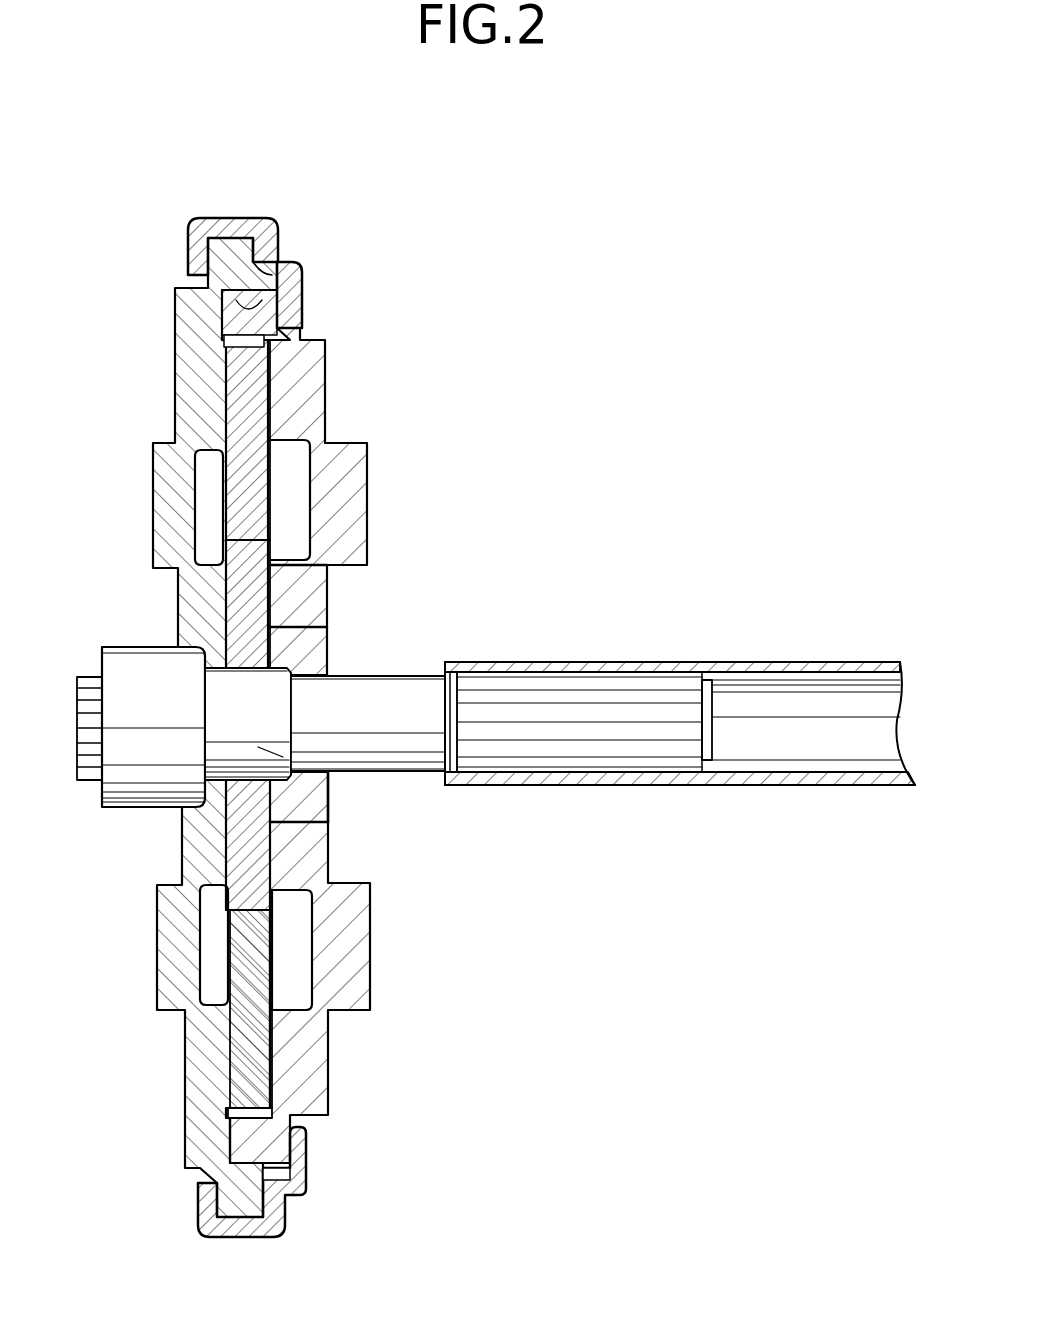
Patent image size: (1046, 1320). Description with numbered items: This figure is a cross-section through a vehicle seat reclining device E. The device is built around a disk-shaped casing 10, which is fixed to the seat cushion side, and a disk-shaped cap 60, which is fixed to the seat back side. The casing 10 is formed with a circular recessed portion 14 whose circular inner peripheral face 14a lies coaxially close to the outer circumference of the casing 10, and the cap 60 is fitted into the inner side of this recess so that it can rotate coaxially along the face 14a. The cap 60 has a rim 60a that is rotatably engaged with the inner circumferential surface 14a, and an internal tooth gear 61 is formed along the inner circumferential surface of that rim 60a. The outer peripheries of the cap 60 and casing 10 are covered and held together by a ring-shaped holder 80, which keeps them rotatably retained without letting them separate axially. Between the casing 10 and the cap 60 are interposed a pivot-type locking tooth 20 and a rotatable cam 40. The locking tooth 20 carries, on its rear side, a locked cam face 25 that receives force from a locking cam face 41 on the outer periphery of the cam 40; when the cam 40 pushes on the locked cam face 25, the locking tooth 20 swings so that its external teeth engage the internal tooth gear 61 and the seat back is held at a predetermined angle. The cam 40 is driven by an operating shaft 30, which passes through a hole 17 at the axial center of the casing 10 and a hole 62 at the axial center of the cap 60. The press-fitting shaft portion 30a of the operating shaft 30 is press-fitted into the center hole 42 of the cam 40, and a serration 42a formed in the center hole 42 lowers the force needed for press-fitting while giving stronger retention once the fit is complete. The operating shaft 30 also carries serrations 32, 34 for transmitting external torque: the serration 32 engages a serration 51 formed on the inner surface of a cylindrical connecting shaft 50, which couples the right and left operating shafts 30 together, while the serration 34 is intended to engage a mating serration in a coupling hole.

The casing 10 is at (174, 336).
The circular recessed portion 14 is at (303, 300).
The circular inner peripheral face 14a is at (273, 272).
The hole 17 is at (187, 652).
The locking tooth 20 is at (274, 411).
The locked cam face 25 is at (245, 560).
The operating shaft 30 is at (408, 664).
The press-fitting shaft portion 30a is at (328, 777).
The serration 32 is at (655, 695).
The serration 34 is at (92, 674).
The cam 40 is at (280, 604).
The locking cam face 41 is at (255, 520).
The center hole 42 is at (322, 628).
The serration 42a is at (235, 776).
The connecting shaft 50 is at (790, 655).
The serration 51 is at (712, 688).
The cap 60 is at (332, 354).
The rim 60a is at (268, 317).
The internal tooth gear 61 is at (282, 335).
The hole 62 is at (328, 803).
The holder 80 is at (190, 240).
The seat reclining device E is at (274, 210).